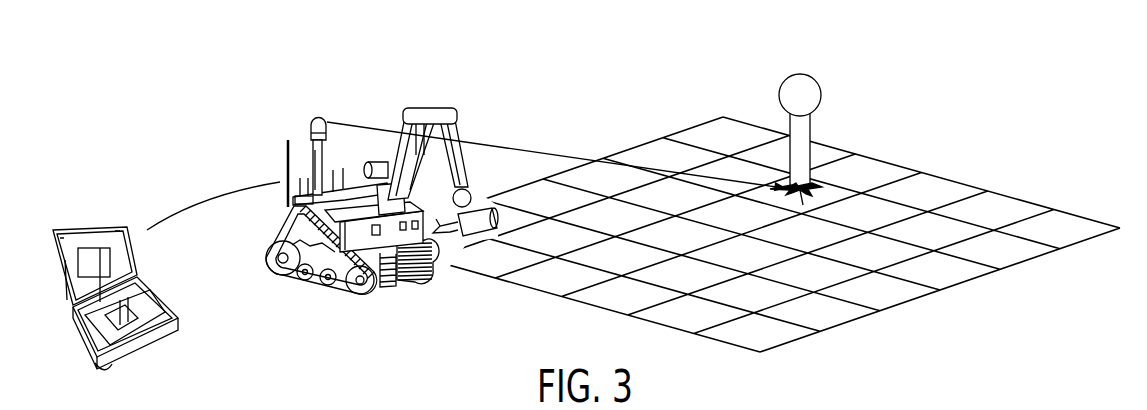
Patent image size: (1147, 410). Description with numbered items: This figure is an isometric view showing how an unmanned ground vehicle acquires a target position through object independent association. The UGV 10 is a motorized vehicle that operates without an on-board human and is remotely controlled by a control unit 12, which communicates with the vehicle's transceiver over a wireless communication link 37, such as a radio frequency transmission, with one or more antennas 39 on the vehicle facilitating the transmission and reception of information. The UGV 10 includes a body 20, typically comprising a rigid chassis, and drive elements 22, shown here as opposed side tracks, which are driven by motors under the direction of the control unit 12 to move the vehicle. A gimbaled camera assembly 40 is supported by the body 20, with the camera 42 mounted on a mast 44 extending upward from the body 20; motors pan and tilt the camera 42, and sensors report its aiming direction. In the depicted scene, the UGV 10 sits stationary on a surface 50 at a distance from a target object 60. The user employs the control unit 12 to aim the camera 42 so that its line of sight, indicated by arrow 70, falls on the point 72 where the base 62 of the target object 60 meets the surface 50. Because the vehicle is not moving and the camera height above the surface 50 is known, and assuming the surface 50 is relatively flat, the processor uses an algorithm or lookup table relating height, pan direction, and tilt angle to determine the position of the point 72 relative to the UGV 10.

The UGV 10 is at (372, 212).
The control unit 12 is at (120, 202).
The body 20 is at (438, 257).
The drive elements 22 is at (320, 298).
The wireless communication link 37 is at (188, 210).
The antennas 39 is at (287, 157).
The gimbaled camera assembly 40 is at (307, 124).
The camera 42 is at (318, 115).
The mast 44 is at (322, 162).
The surface 50 is at (900, 175).
The target object 60 is at (826, 147).
The base 62 is at (812, 183).
The arrow 70 is at (577, 157).
The point 72 is at (796, 198).